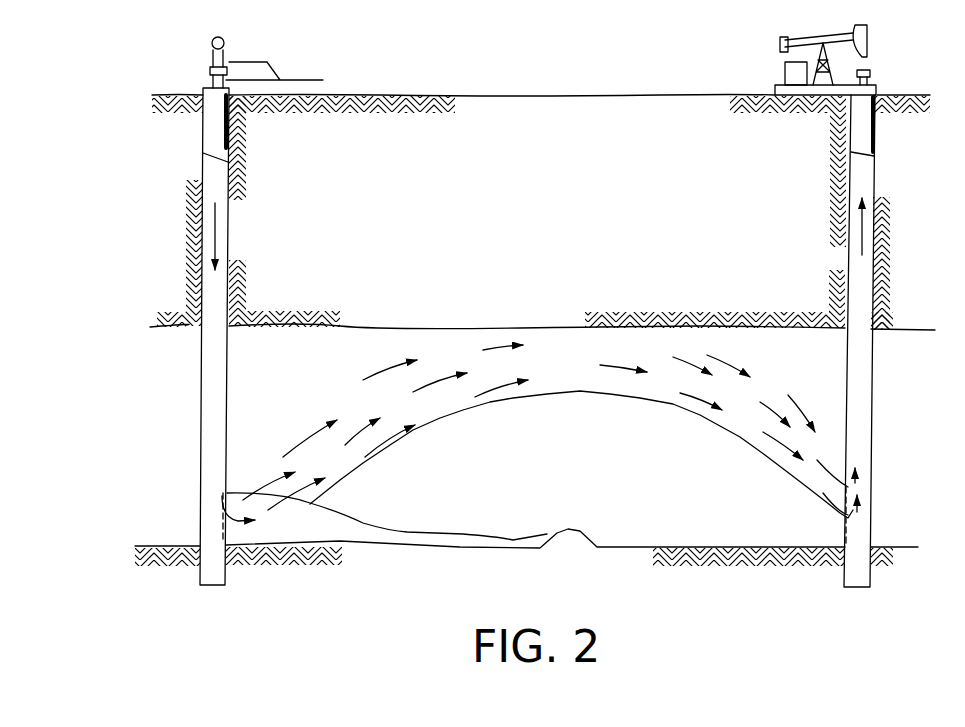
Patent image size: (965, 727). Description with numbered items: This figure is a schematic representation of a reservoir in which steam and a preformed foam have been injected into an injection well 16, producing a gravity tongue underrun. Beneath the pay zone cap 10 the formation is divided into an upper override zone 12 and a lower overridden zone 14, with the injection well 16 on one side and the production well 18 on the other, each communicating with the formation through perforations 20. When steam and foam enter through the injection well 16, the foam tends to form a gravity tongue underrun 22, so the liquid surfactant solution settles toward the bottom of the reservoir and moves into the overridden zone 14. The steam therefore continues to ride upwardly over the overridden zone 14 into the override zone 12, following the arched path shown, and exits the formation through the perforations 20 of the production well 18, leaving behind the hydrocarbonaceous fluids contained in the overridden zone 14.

The pay zone cap 10 is at (540, 192).
The override zone 12 is at (570, 372).
The overridden zone 14 is at (597, 471).
The injection well 16 is at (203, 123).
The production well 18 is at (876, 117).
The perforations 20 is at (225, 493).
The gravity tongue underrun 22 is at (338, 528).